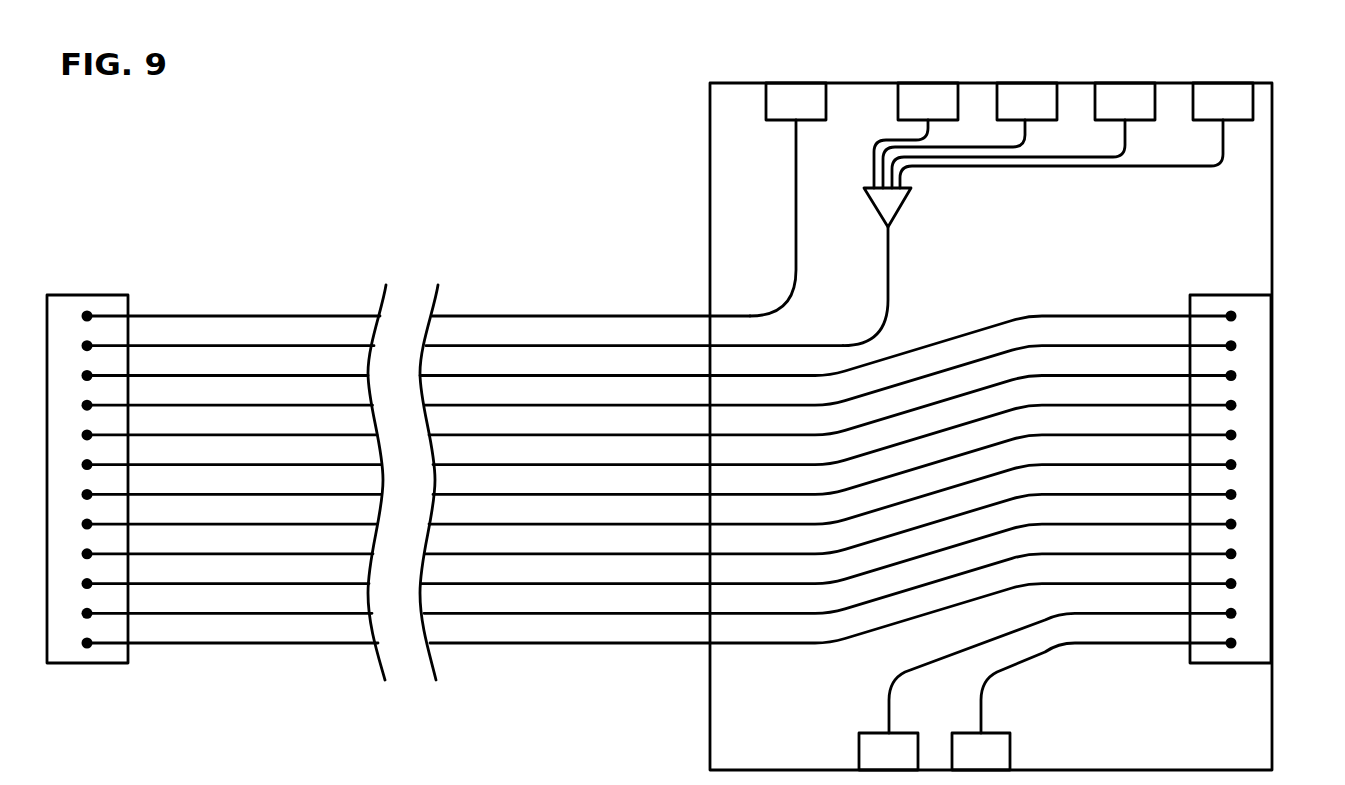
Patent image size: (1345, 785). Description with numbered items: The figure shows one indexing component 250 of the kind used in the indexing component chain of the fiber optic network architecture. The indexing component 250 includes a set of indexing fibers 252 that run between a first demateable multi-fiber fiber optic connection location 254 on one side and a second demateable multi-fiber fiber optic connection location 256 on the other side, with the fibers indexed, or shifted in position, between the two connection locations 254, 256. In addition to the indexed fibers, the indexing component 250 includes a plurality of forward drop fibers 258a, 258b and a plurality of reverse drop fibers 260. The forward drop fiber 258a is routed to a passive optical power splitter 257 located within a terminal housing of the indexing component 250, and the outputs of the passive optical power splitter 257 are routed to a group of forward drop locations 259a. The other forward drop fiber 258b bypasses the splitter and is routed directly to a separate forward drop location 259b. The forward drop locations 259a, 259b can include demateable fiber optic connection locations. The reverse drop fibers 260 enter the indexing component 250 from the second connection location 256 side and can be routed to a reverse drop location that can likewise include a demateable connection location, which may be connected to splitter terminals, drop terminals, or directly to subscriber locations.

The indexing component 250 is at (503, 161).
The indexing fibers 252 is at (530, 643).
The first demateable multi-fiber fiber optic connection location 254 is at (87, 663).
The second demateable multi-fiber fiber optic connection location 256 is at (1273, 478).
The passive optical power splitter 257 is at (901, 210).
The forward drop fiber 258a is at (889, 282).
The forward drop fiber 258b is at (795, 227).
The forward drop locations 259a is at (927, 82).
The forward drop location 259b is at (795, 82).
The reverse drop fibers 260 is at (897, 692).